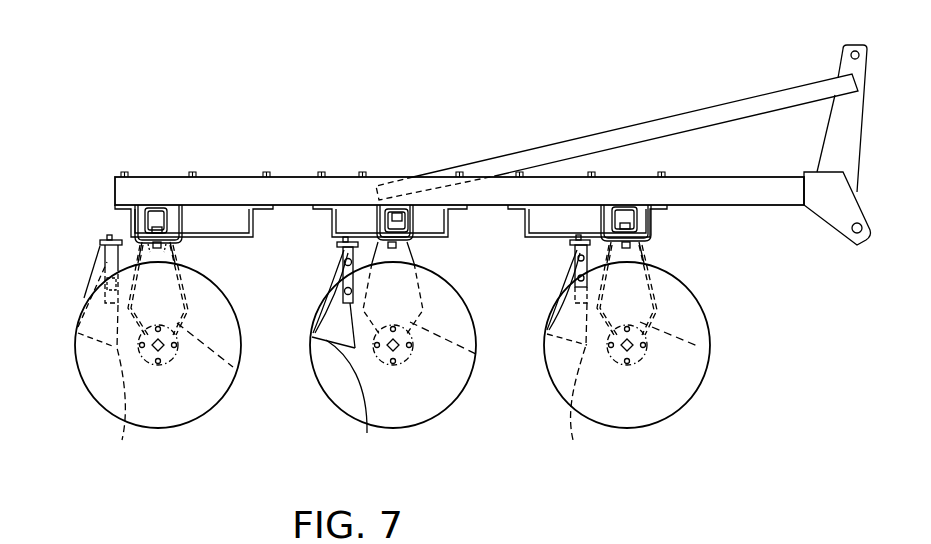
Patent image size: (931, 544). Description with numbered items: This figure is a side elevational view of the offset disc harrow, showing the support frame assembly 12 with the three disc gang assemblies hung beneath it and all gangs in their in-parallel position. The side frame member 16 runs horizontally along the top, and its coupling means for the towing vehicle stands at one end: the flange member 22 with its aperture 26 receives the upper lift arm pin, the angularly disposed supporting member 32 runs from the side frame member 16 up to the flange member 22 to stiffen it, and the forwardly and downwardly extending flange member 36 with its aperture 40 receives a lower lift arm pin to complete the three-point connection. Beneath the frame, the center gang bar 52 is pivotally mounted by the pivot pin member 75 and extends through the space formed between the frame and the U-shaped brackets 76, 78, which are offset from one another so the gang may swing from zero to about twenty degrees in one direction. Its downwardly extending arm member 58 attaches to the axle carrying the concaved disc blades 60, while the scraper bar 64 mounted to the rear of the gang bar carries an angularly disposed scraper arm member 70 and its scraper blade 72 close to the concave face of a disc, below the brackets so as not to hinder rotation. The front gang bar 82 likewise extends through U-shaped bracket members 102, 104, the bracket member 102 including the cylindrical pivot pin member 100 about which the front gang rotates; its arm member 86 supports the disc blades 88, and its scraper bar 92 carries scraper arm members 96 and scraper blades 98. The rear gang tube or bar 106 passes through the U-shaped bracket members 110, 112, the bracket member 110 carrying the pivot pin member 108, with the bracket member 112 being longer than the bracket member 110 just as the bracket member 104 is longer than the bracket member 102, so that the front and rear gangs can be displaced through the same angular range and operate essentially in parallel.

The support frame assembly 12 is at (300, 178).
The side frame member 16 is at (797, 207).
The flange member 22 is at (853, 118).
The aperture 26 is at (858, 51).
The supporting member 32 is at (770, 98).
The flange member 36 is at (870, 195).
The aperture 40 is at (864, 233).
The gang tube or bar 52 is at (402, 213).
The arm member 58 is at (445, 360).
The disc blade 60 is at (438, 420).
The scraper bar 64 is at (312, 334).
The scraper arm member 70 is at (356, 350).
The scraper blade 72 is at (367, 433).
The pivot pin member 75 is at (400, 210).
The U-shaped bracket 76 is at (447, 236).
The U-shaped bracket 78 is at (334, 238).
The gang tube or bar 82 is at (622, 214).
The arm member 86 is at (233, 367).
The disc blade 88 is at (218, 402).
The scraper bar 92 is at (100, 243).
The scraper arm member 96 is at (80, 326).
The scraper blade 98 is at (353, 390).
The pivot pin member 100 is at (629, 219).
The U-shaped bracket member 102 is at (651, 237).
The U-shaped bracket member 104 is at (537, 238).
The rear gang tube or bar 106 is at (157, 210).
The cylindrical pivot pin member 108 is at (163, 230).
The U-shaped bracket member 110 is at (180, 240).
The U-shaped bracket member 112 is at (254, 237).